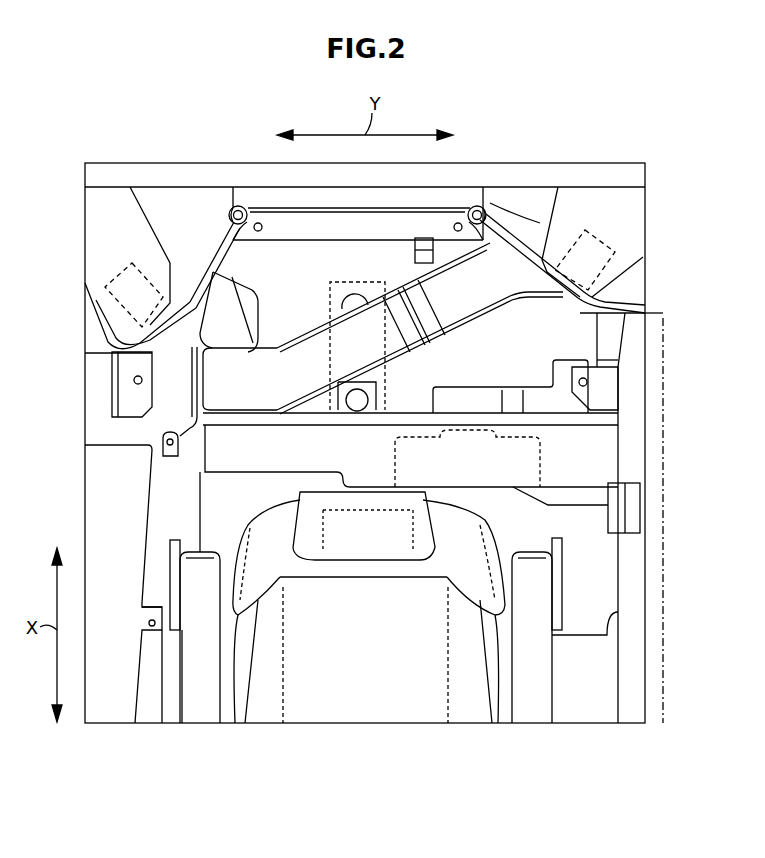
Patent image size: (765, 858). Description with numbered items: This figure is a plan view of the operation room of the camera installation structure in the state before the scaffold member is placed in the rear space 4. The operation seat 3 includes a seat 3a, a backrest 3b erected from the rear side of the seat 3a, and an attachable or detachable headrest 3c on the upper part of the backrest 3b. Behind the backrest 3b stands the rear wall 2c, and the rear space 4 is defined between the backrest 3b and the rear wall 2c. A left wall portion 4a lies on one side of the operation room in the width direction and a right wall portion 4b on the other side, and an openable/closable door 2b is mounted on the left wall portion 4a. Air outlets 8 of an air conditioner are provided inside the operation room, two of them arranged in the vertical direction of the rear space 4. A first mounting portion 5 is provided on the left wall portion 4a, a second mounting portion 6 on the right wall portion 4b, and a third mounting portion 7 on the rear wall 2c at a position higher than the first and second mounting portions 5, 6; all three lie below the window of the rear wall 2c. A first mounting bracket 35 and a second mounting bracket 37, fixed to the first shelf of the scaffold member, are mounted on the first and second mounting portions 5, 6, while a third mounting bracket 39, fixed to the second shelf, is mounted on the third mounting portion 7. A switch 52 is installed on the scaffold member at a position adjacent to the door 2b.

The door 2b is at (665, 448).
The rear wall 2c is at (582, 170).
The operation seat 3 is at (369, 653).
The seat 3a is at (412, 695).
The backrest 3b is at (360, 568).
The headrest 3c is at (330, 548).
The rear space 4 is at (280, 302).
The left wall portion 4a is at (633, 345).
The right wall portion 4b is at (88, 350).
The first mounting portion 5 is at (612, 382).
The second mounting portion 6 is at (130, 408).
The third mounting portion 7 is at (280, 208).
The air outlets 8 is at (115, 265).
The first mounting bracket 35 is at (642, 362).
The second mounting bracket 37 is at (112, 390).
The third mounting bracket 39 is at (425, 225).
The switch 52 is at (642, 512).